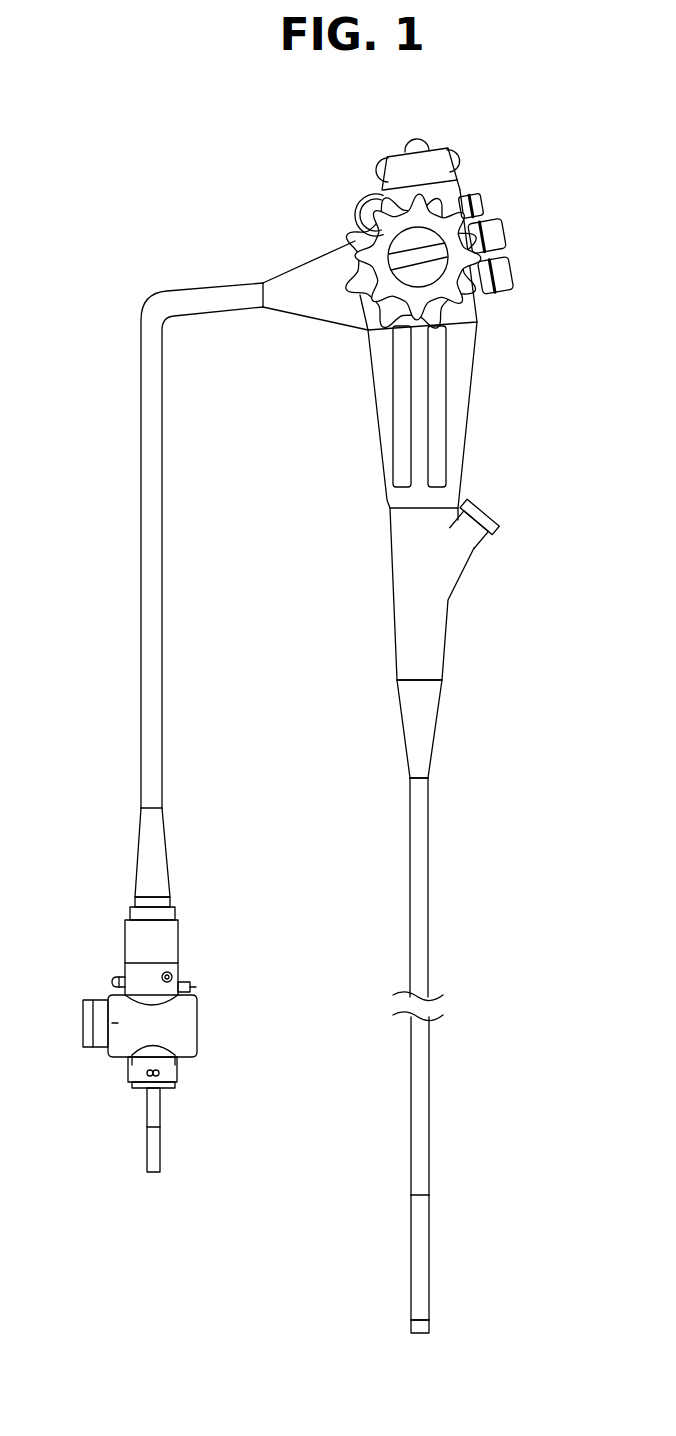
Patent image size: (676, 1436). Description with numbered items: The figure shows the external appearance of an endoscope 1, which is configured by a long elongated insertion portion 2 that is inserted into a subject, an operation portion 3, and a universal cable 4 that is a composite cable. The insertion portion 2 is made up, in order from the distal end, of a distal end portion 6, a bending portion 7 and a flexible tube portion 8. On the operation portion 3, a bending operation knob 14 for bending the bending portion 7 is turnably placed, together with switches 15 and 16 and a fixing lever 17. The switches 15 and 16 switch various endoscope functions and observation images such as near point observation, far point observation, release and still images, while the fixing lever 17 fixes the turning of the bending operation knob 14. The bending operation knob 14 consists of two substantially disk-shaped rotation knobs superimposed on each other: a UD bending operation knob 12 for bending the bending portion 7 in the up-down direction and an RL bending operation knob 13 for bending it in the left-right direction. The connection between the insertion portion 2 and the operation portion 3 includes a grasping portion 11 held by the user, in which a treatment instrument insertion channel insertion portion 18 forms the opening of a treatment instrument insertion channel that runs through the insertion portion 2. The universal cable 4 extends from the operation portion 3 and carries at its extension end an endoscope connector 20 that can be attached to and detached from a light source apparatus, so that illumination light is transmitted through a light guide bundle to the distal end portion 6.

The endoscope 1 is at (258, 182).
The insertion portion 2 is at (481, 1342).
The operation portion 3 is at (357, 460).
The universal cable 4 is at (141, 433).
The distal end portion 6 is at (430, 1328).
The bending portion 7 is at (430, 1252).
The flexible tube portion 8 is at (430, 1137).
The grasping portion 11 is at (460, 432).
The UD bending operation knob 12 is at (392, 318).
The RL bending operation knob 13 is at (373, 268).
The bending operation knob 14 is at (291, 322).
The switch 15 is at (509, 276).
The switch 16 is at (505, 237).
The fixing lever 17 is at (358, 204).
The treatment instrument insertion channel insertion portion 18 is at (493, 513).
The endoscope connector 20 is at (125, 943).